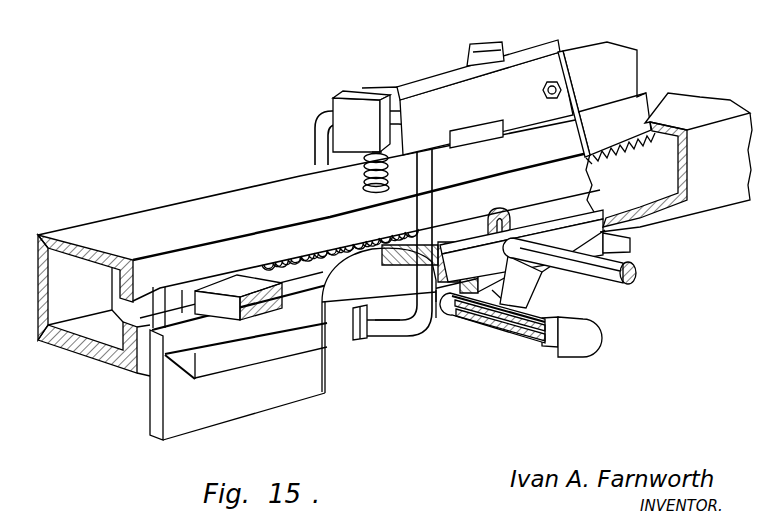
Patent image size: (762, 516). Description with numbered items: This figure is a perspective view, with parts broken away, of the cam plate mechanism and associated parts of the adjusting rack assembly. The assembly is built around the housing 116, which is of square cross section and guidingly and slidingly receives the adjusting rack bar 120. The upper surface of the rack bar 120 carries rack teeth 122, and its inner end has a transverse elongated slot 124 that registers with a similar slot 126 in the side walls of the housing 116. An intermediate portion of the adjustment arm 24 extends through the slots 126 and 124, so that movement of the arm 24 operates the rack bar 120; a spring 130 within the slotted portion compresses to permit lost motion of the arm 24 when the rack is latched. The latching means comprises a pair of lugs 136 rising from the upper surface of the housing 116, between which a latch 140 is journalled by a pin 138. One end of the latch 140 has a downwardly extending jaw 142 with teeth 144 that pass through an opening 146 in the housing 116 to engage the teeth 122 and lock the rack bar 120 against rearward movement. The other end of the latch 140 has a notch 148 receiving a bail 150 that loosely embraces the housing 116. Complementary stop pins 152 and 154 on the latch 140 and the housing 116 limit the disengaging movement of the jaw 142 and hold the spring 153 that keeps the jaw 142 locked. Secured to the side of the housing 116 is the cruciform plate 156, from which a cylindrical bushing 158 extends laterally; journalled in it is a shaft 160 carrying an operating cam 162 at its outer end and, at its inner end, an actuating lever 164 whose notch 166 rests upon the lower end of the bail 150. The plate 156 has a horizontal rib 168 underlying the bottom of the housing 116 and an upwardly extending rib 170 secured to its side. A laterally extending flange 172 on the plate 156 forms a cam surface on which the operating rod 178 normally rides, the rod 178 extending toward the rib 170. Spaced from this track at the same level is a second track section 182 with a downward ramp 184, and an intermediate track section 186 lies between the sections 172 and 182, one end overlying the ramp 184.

The adjustment arm 24 is at (226, 300).
The cylindrical housing 116 is at (257, 196).
The adjusting rack bar 120 is at (167, 305).
The rack teeth 122 is at (591, 160).
The transverse elongated slot 124 is at (280, 280).
The slot 126 is at (507, 217).
The spring 130 is at (281, 263).
The lugs 136 is at (538, 53).
The pin 138 is at (561, 88).
The latch 140 is at (442, 98).
The jaw 142 is at (632, 114).
The teeth 144 is at (621, 150).
The opening 146 is at (657, 124).
The notch 148 is at (382, 89).
The bail 150 is at (316, 148).
The stop pin 152 is at (366, 165).
The spring 153 is at (392, 162).
The stop pin 154 is at (366, 186).
The plate 156 is at (211, 410).
The cylindrical boss or bushing 158 is at (521, 336).
The shaft 160 is at (486, 312).
The operating cam 162 is at (600, 334).
The actuating lever 164 is at (406, 320).
The notch 166 is at (361, 339).
The horizontal lateral flange or rib 168 is at (119, 375).
The upwardly extending rib 170 is at (239, 316).
The laterally extending rib or flange 172 is at (260, 353).
The operating rod 178 is at (614, 280).
The second track section 182 is at (624, 245).
The downward ramp 184 is at (528, 283).
The intermediate track section 186 is at (487, 283).